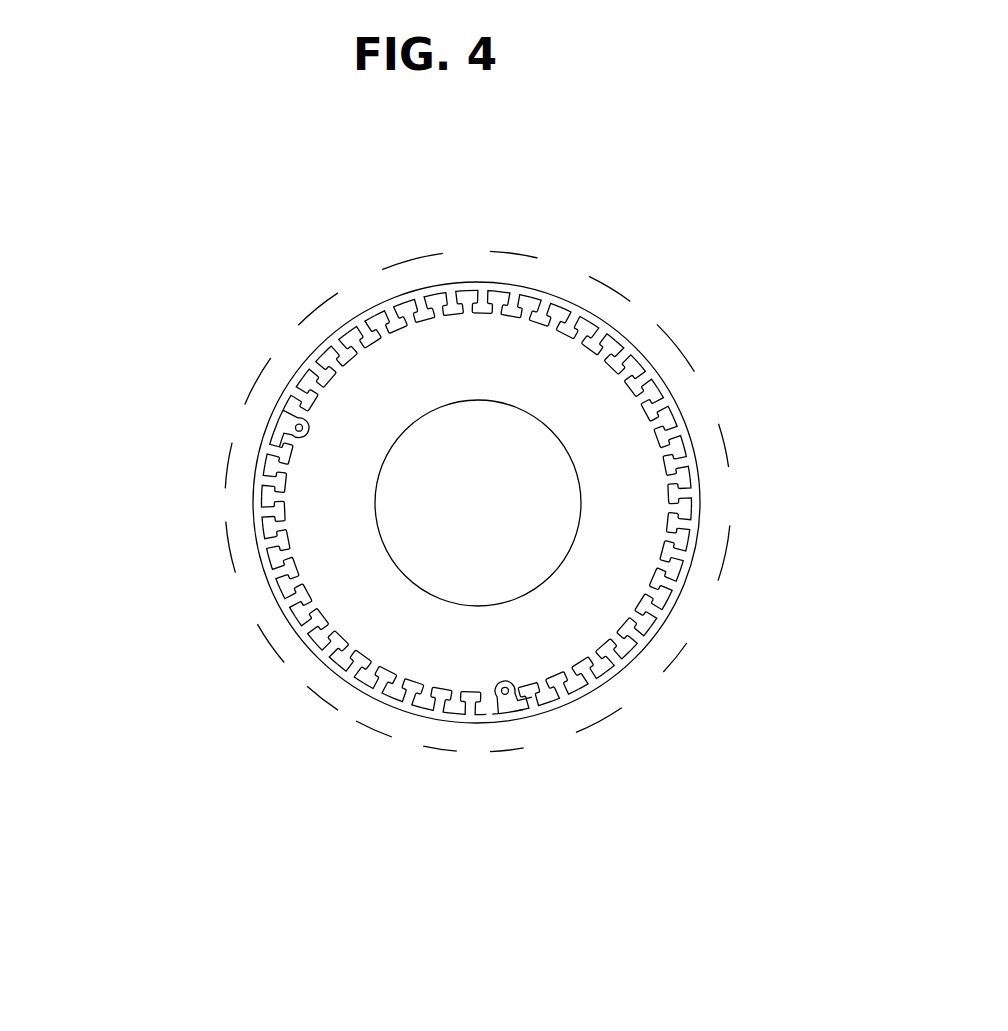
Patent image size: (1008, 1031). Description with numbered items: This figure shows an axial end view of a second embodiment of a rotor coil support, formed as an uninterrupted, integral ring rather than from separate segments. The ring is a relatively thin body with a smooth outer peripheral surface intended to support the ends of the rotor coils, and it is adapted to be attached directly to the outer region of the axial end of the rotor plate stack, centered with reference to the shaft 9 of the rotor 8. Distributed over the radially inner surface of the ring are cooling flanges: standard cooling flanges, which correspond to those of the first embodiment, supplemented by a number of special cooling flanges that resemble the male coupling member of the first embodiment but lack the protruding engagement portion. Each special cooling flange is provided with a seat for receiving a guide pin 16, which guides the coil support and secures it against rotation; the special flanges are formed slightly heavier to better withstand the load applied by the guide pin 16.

The rotor 8 is at (730, 530).
The shaft 9 is at (578, 528).
The guide pin 16 is at (505, 694).